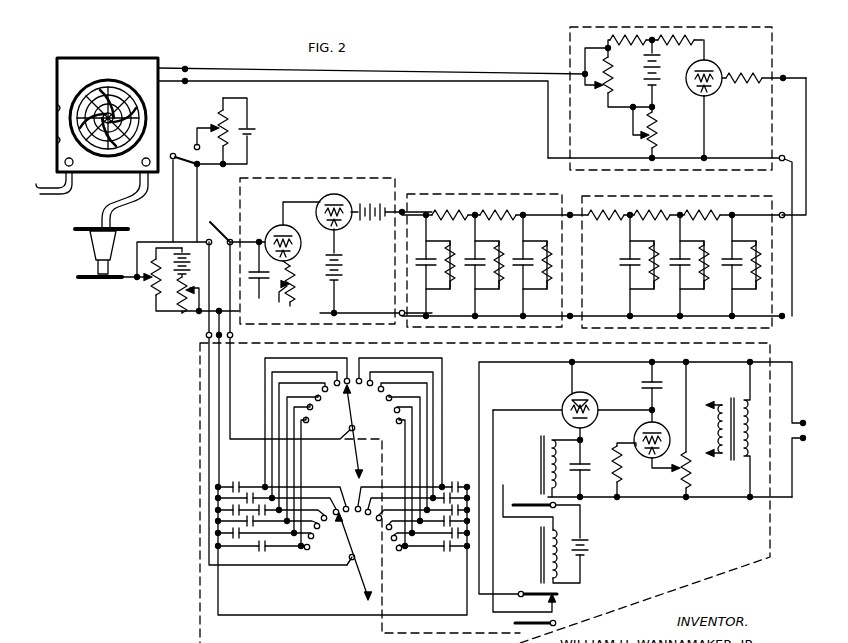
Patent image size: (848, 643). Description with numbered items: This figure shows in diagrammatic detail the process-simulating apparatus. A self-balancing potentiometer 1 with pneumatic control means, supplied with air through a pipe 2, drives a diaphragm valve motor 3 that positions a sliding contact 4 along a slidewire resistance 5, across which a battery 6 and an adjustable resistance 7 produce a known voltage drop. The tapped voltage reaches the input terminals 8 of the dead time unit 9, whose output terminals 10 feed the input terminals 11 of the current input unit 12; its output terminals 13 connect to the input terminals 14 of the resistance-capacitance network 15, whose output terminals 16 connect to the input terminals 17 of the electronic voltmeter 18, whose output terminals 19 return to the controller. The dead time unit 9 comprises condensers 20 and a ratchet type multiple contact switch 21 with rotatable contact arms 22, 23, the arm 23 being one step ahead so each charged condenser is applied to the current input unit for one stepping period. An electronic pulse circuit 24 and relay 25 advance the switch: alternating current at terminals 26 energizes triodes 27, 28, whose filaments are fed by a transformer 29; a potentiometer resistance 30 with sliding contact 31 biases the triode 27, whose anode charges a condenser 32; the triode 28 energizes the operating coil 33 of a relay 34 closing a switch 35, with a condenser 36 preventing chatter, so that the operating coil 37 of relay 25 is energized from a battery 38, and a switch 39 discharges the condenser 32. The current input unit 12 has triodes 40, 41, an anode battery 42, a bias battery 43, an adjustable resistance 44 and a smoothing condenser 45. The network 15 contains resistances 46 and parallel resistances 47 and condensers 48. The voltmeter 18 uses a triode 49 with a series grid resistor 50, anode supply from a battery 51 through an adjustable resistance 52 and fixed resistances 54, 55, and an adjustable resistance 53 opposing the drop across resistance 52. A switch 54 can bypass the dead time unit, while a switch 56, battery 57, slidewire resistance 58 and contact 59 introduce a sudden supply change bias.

The self-balancing potentiometer 1 is at (58, 77).
The pipe 2 is at (50, 185).
The diaphragm valve motor 3 is at (92, 252).
The sliding contact 4 is at (139, 282).
The slidewire resistance 5 is at (151, 270).
The battery 6 is at (188, 261).
The adjustable resistance 7 is at (182, 290).
The input terminals 8 is at (206, 335).
The dead time unit 9 is at (199, 420).
The output terminals 10 is at (233, 335).
The input terminals 11 is at (258, 241).
The current input unit 12 is at (290, 178).
The output terminals 13 is at (403, 210).
The input terminals 14 is at (430, 206).
The resistance-capacitance network 15 is at (470, 196).
The output terminals 16 is at (790, 208).
The input terminals 17 is at (785, 77).
The electronic voltmeter 18 is at (705, 27).
The output terminals 19 is at (583, 73).
The condensers 20 is at (236, 483).
The ratchet type multiple contact switch 21 is at (346, 576).
The rotatable contact arm 22 is at (345, 548).
The rotatable contact arm 23 is at (349, 414).
The electronic pulse circuit 24 is at (658, 522).
The relay 25 is at (541, 541).
The terminals 26 is at (810, 418).
The triode 27 is at (660, 428).
The triode 28 is at (596, 401).
The transformer 29 is at (740, 396).
The potentiometer resistance 30 is at (692, 472).
The sliding contact 31 is at (675, 470).
The condenser 32 is at (660, 386).
The operating coil 33 is at (557, 462).
The relay 34 is at (541, 436).
The switch 35 is at (522, 494).
The condenser 36 is at (589, 468).
The operating coil 37 is at (560, 561).
The battery 38 is at (590, 547).
The switch 39 is at (527, 585).
The triode 40 is at (278, 226).
The triode 41 is at (322, 198).
The battery 42 is at (383, 222).
The battery 43 is at (341, 273).
The adjustable resistance 44 is at (297, 287).
The condenser 45 is at (255, 275).
The resistances 46 is at (713, 212).
The resistances 47 is at (762, 248).
The condensers 48 is at (719, 286).
The triode 49 is at (716, 67).
The series grid resistor 50 is at (755, 84).
The battery 51 is at (660, 72).
The adjustable resistance 52 is at (660, 138).
The adjustable resistance 53 is at (614, 72).
The fixed resistance / switch 54 is at (228, 215).
The fixed resistance 55 is at (628, 35).
The switch 56 is at (187, 152).
The battery 57 is at (258, 134).
The slidewire resistance 58 is at (223, 134).
The contact 59 is at (218, 128).